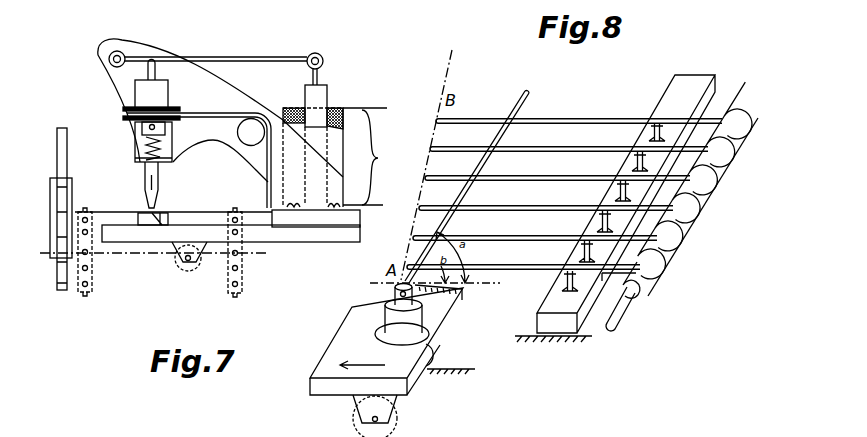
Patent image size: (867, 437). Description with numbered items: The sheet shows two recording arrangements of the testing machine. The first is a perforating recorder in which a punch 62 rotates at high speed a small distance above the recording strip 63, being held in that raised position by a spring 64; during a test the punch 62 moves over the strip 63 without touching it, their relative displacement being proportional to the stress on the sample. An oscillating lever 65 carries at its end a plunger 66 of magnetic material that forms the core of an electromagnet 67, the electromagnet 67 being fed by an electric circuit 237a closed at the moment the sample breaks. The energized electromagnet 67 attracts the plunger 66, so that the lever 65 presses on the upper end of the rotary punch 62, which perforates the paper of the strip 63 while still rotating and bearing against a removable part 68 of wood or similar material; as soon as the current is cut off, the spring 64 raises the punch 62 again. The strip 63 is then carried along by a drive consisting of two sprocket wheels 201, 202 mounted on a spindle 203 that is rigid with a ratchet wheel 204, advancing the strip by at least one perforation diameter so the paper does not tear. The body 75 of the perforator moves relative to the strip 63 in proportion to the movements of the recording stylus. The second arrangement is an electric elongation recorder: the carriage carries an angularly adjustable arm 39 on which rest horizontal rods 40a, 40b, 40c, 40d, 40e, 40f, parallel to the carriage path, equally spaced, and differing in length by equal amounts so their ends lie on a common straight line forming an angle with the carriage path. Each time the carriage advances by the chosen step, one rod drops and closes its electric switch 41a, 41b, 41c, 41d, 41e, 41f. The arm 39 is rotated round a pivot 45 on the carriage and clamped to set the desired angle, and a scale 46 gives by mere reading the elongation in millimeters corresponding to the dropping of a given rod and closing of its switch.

In FIG. 8, the angularly adjustable arm 39 is at (530, 94).
In FIG. 8, the horizontal rod 40a is at (492, 270).
In FIG. 8, the horizontal rod 40b is at (493, 240).
In FIG. 8, the horizontal rod 40c is at (518, 207).
In FIG. 8, the horizontal rod 40d is at (543, 178).
In FIG. 8, the horizontal rod 40e is at (547, 149).
In FIG. 8, the horizontal rod 40f is at (580, 118).
In FIG. 8, the electric switch 41a is at (565, 288).
In FIG. 8, the electric switch 41b is at (585, 237).
In FIG. 8, the electric switch 41c is at (603, 207).
In FIG. 8, the electric switch 41d is at (621, 177).
In FIG. 8, the electric switch 41e is at (637, 148).
In FIG. 8, the electric switch 41f is at (655, 117).
In FIG. 8, the pivot 45 is at (402, 283).
In FIG. 8, the scale 46 is at (445, 300).
In FIG. 7, the punch 62 is at (158, 188).
In FIG. 7, the recording strip 63 is at (197, 208).
In FIG. 7, the spring 64 is at (145, 135).
In FIG. 7, the oscillating lever 65 is at (208, 62).
In FIG. 7, the plunger 66 is at (312, 95).
In FIG. 7, the electromagnet 67 is at (333, 143).
In FIG. 7, the removable part 68 is at (165, 222).
In FIG. 7, the body of the perforator 75 is at (283, 228).
In FIG. 7, the sprocket wheel 201 is at (242, 286).
In FIG. 7, the sprocket wheel 202 is at (92, 288).
In FIG. 7, the spindle 203 is at (160, 252).
In FIG. 7, the ratchet wheel 204 is at (60, 292).
In FIG. 7, the electric circuit 237a is at (376, 156).